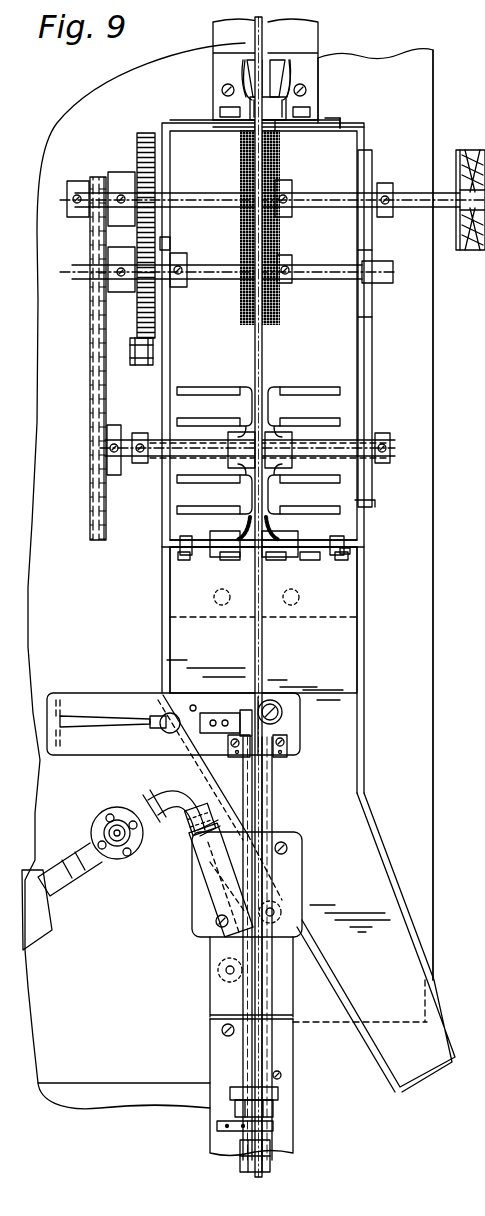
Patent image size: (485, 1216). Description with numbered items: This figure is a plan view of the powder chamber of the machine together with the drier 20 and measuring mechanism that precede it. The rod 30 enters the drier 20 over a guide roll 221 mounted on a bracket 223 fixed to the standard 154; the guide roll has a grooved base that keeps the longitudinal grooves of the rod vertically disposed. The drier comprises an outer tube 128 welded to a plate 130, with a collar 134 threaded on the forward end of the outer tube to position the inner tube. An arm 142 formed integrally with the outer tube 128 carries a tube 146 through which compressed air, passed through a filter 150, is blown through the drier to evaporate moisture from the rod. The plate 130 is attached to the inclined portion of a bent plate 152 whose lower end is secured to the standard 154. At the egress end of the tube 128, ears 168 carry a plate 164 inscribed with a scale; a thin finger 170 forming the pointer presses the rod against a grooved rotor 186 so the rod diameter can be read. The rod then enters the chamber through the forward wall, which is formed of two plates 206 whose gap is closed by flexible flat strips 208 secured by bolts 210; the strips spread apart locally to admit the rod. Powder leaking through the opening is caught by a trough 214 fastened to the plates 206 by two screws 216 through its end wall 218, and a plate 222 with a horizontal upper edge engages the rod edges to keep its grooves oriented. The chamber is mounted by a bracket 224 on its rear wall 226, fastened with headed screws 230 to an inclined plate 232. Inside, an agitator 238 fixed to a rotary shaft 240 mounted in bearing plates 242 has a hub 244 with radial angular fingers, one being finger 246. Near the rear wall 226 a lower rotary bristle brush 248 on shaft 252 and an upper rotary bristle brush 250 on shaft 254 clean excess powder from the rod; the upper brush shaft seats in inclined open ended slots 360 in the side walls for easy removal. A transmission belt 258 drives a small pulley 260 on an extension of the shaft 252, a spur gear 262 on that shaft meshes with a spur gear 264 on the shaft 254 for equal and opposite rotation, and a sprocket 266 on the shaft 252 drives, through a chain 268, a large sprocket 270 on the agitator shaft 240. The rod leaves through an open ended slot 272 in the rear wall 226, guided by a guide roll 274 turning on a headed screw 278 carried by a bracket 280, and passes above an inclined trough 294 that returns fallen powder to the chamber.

The drier 20 is at (326, 1040).
The rod 30 is at (262, 342).
The outer tube 128 is at (273, 800).
The plate 130 is at (290, 873).
The collar 134 is at (270, 1108).
The arm 142 is at (210, 880).
The tube 146 is at (208, 838).
The filter 150 is at (45, 930).
The bent plate 152 is at (222, 1005).
The standard 154 is at (218, 1058).
The plate 164 is at (128, 703).
The ears 168 is at (227, 747).
The finger 170 is at (118, 727).
The rotor 186 is at (283, 718).
The plates 206 is at (195, 545).
The flat strips 208 is at (243, 520).
The bolts 210 is at (225, 555).
The trough 214 is at (357, 617).
The screws 216 is at (190, 555).
The end wall 218 is at (348, 551).
The guide roll 221 is at (248, 1180).
The plate 222 is at (274, 554).
The bracket 223 is at (272, 1137).
The bracket 224 is at (305, 74).
The rear wall 226 is at (350, 125).
The headed screws 230 is at (222, 89).
The inclined plate 232 is at (420, 132).
The agitator 238 is at (352, 371).
The rotary shaft 240 is at (340, 445).
The plates 242 is at (158, 377).
The hub 244 is at (290, 442).
The finger 246 is at (290, 388).
The rotary bristle brush 248 is at (277, 150).
The rotary bristle brush 250 is at (275, 320).
The shaft 252 is at (313, 197).
The shaft 254 is at (320, 267).
The transmission belt 258 is at (466, 236).
The small pulley 260 is at (474, 132).
The spur gear 262 is at (140, 133).
The spur gear 264 is at (150, 325).
The sprocket 266 is at (92, 177).
The chain 268 is at (90, 337).
The sprocket 270 is at (118, 430).
The slot 272 is at (247, 135).
The guide roll 274 is at (265, 69).
The headed screw 278 is at (237, 69).
The bracket 280 is at (337, 118).
The inclined trough 294 is at (287, 74).
The slots 360 is at (362, 236).